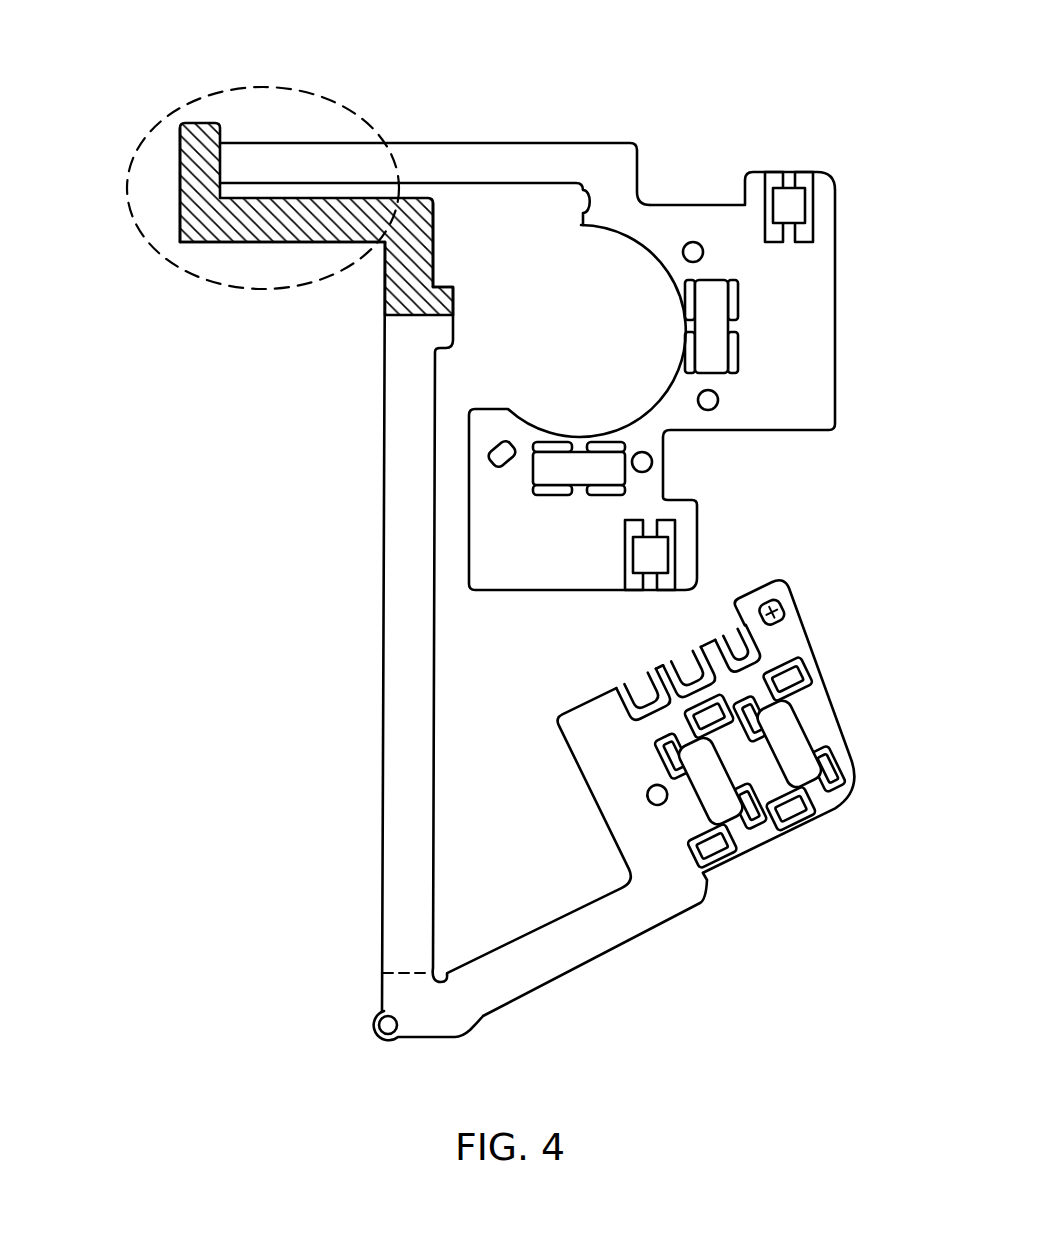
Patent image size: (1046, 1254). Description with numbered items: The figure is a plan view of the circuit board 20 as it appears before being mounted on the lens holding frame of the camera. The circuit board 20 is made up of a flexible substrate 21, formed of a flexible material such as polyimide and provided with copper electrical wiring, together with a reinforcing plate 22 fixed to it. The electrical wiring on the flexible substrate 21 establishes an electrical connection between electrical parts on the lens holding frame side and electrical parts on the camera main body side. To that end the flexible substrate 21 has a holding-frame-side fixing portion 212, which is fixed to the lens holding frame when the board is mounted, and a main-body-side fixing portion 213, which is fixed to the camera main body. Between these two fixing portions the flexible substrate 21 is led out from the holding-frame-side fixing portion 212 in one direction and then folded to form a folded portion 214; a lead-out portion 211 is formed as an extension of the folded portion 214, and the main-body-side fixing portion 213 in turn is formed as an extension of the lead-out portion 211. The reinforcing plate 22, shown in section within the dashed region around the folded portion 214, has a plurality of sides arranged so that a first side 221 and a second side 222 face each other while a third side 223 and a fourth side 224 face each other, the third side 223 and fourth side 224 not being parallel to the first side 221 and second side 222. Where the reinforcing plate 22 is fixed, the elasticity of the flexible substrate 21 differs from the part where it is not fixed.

The circuit board 20 is at (583, 523).
The flexible substrate 21 is at (298, 153).
The reinforcing plate 22 is at (286, 218).
The lead-out portion 211 is at (388, 655).
The holding-frame-side fixing portion 212 is at (812, 364).
The main-body-side fixing portion 213 is at (803, 650).
The folded portion 214 is at (260, 293).
The first side 221 is at (180, 183).
The second side 222 is at (435, 230).
The third side 223 is at (217, 243).
The fourth side 224 is at (437, 282).